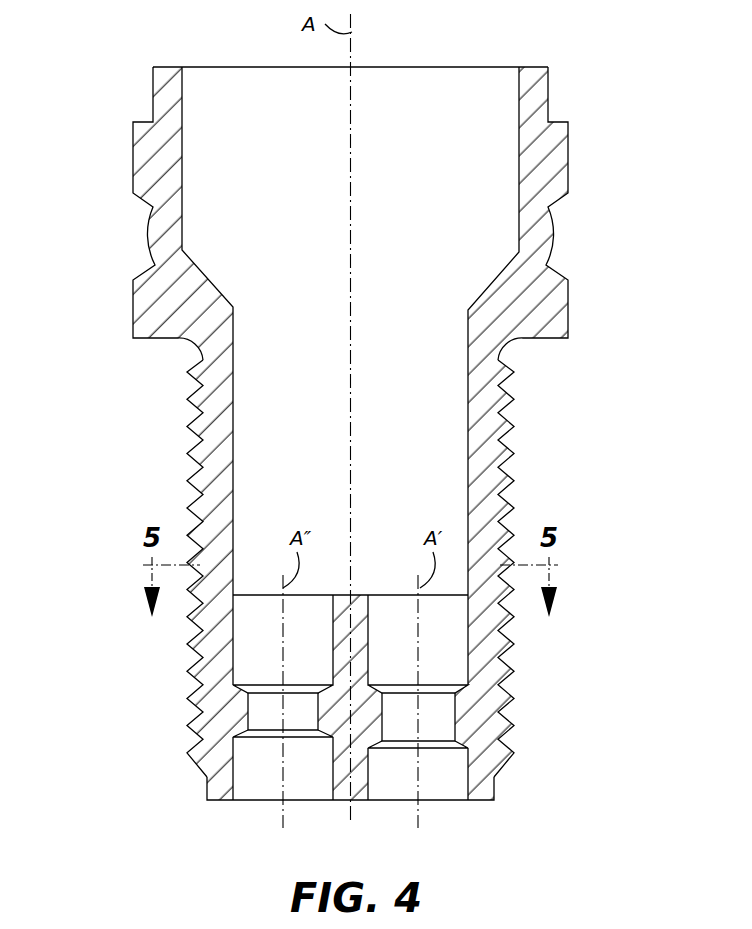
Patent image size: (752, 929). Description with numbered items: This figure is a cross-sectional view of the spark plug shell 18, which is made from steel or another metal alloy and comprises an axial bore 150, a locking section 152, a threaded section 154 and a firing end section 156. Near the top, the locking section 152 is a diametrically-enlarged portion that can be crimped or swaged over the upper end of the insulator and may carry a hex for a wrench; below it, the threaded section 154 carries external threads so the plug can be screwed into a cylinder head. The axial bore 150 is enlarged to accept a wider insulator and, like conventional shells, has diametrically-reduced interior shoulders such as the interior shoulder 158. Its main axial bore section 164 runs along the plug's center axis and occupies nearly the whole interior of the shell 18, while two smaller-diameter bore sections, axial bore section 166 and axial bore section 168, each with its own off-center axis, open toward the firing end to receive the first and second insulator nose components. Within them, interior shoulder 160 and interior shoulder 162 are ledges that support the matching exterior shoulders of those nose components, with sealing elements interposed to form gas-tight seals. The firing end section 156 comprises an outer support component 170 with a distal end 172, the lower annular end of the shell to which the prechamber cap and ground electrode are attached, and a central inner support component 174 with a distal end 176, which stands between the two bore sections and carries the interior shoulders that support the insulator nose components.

The axial bore 150 is at (440, 93).
The locking section 152 is at (155, 187).
The interior shoulder 158 is at (207, 279).
The shell 18 is at (545, 300).
The axial bore section 164 is at (315, 466).
The threaded section 154 is at (210, 503).
The axial bore section 168 is at (257, 640).
The axial bore section 166 is at (447, 635).
The interior shoulder 160 is at (460, 685).
The interior shoulder 162 is at (247, 688).
The inner support component 174 is at (337, 773).
The distal end 176 is at (362, 802).
The firing end section 156 is at (223, 777).
The outer support component 170 is at (480, 792).
The distal end 172 is at (475, 802).